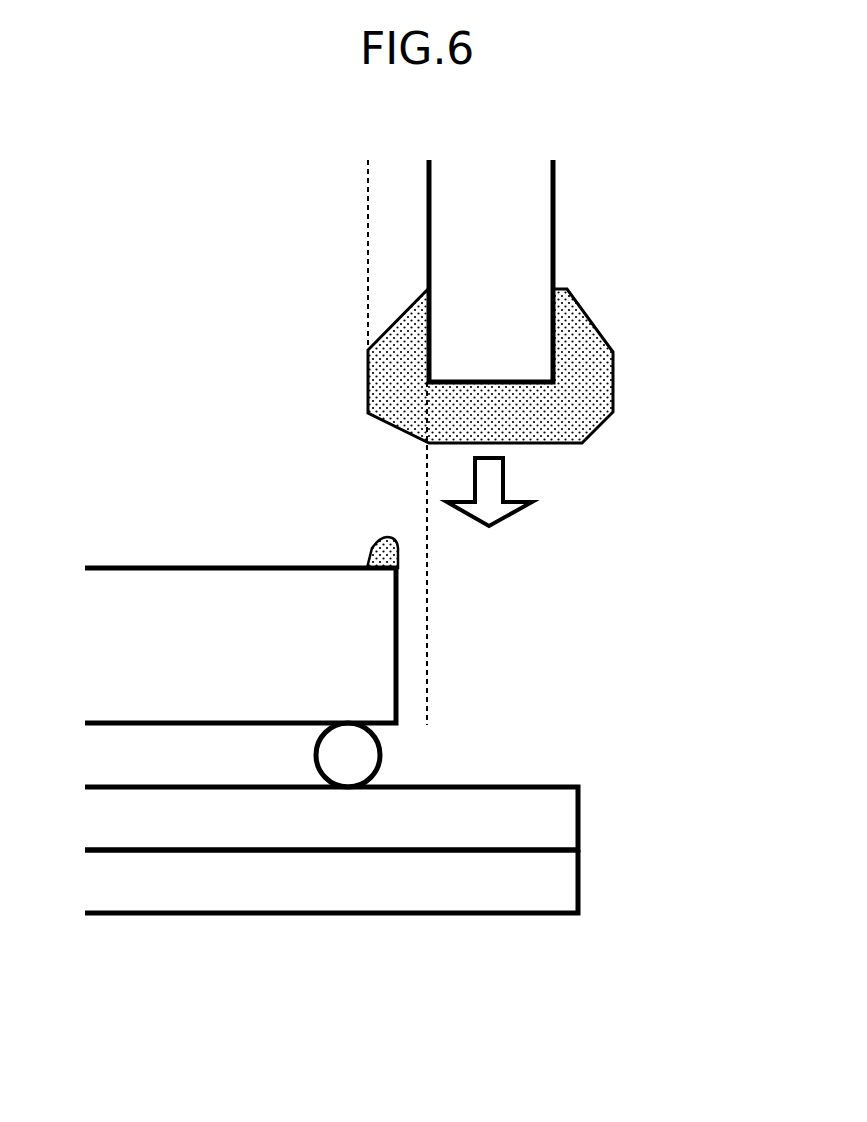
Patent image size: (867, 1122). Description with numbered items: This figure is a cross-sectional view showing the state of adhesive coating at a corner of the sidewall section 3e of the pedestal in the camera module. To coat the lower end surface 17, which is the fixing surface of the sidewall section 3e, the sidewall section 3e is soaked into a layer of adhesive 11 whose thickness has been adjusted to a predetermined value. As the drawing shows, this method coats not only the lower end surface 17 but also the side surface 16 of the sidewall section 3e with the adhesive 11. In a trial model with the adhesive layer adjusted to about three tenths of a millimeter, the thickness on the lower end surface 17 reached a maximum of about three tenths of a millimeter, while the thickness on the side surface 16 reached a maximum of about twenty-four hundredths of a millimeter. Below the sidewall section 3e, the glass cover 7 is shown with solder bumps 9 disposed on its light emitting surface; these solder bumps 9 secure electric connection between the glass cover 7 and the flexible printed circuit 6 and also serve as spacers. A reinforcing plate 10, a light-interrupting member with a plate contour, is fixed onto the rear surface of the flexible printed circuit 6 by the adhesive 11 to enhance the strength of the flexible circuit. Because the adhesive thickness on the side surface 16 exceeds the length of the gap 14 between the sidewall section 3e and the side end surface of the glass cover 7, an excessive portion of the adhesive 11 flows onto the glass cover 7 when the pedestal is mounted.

The sidewall section 3e is at (504, 287).
The adhesive 11 is at (582, 352).
The side surface 16 is at (477, 208).
The lower end surface 17 is at (675, 303).
The gap 14 is at (317, 693).
The solder bump 9 is at (357, 753).
The flexible printed circuit 6 is at (562, 815).
The reinforcing plate 10 is at (562, 870).
The glass cover 7 is at (215, 677).